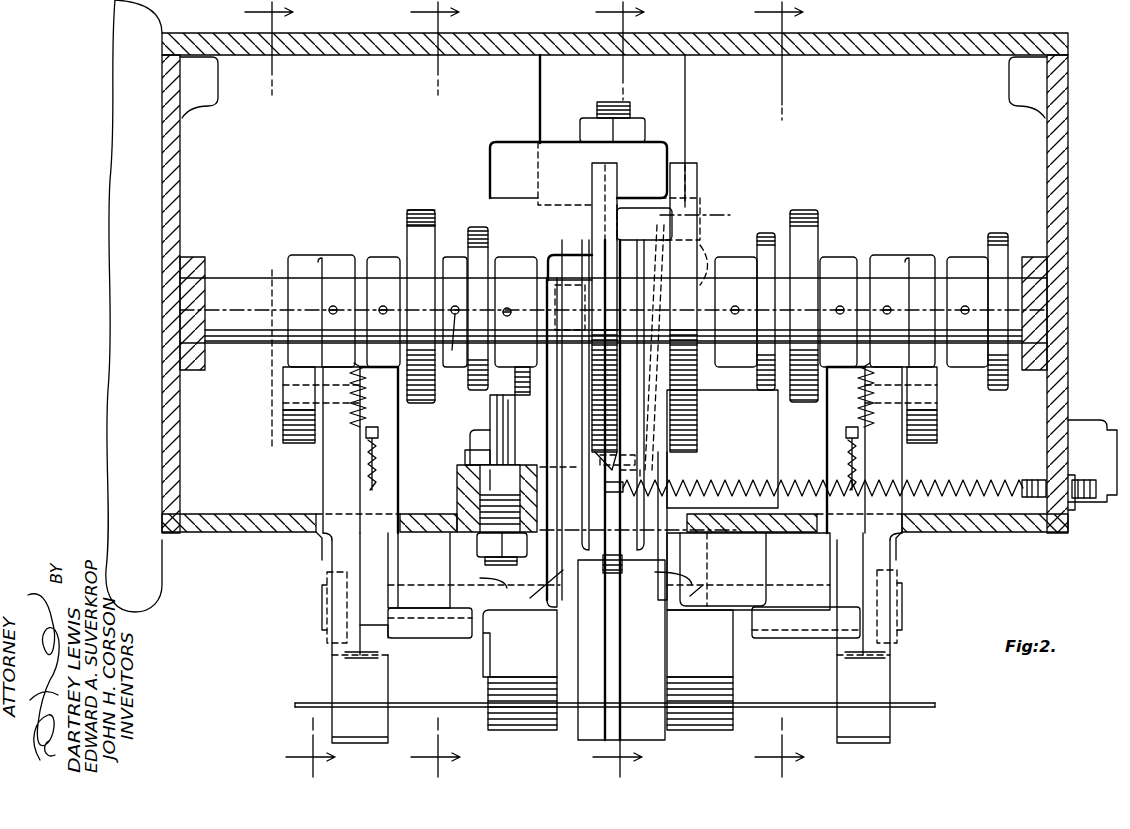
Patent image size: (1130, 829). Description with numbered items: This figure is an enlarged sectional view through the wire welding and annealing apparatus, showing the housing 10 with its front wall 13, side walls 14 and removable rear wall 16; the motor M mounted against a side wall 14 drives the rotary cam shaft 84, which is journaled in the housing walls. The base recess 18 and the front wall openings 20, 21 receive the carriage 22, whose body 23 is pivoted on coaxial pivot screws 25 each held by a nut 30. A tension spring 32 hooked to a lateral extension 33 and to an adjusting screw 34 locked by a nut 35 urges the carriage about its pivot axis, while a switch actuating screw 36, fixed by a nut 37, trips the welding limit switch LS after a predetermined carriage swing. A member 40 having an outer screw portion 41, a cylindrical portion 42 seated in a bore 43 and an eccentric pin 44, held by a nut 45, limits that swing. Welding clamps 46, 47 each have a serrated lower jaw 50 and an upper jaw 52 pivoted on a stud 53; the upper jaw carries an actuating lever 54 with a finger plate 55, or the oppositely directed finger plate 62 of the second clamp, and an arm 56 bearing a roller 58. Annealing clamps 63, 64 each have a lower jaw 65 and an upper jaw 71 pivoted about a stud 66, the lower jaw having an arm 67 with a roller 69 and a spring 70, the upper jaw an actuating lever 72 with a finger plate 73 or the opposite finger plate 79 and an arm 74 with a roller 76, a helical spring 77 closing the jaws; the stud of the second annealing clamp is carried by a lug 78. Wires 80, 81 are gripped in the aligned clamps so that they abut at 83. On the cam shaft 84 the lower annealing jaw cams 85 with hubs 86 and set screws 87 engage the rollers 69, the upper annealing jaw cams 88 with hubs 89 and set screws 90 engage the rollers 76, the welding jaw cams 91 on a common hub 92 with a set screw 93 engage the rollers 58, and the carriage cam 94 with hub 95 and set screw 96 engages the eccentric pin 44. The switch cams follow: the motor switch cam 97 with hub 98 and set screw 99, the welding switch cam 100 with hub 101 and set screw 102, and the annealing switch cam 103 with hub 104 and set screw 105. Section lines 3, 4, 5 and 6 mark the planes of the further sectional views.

The electric motor M is at (110, 300).
The housing 10 is at (1073, 230).
The front wall 13 is at (215, 535).
The side walls 14 is at (175, 158).
The removable rear wall 16 is at (905, 45).
The recess 18 is at (538, 88).
The opening 20 is at (318, 535).
The opening 21 is at (905, 533).
The carriage 22 is at (481, 163).
The carriage body 23 is at (430, 533).
The pivot screw 25 is at (607, 102).
The nut 30 is at (640, 125).
The helical spring 32 is at (975, 482).
The lateral extension 33 is at (617, 492).
The adjusting screw 34 is at (1032, 480).
The nut 35 is at (1082, 480).
The switch actuating screw 36 is at (555, 448).
The nut 37 is at (470, 440).
The member 40 is at (480, 430).
The outer screw portion 41 is at (470, 520).
The intermediate right cylindrical portion 42 is at (480, 480).
The bore 43 is at (480, 500).
The eccentric pin portion 44 is at (505, 412).
The nut 45 is at (518, 548).
The welding clamp 46 is at (553, 742).
The welding clamp 47 is at (679, 738).
The lower clamp jaw 50 is at (520, 718).
The upper clamp jaw 52 is at (585, 742).
The stud 53 is at (704, 582).
The actuating lever 54 is at (605, 590).
The finger plate 55 is at (1088, 420).
The arm 56 is at (578, 497).
The roller 58 is at (596, 265).
The finger plate 62 is at (712, 640).
The annealing clamp 63 is at (317, 651).
The annealing clamp 64 is at (903, 661).
The lower jaw 65 is at (360, 745).
The stud 66 is at (325, 622).
The arm 67 is at (335, 480).
The roller 69 is at (283, 372).
The spring 70 is at (374, 470).
The upper jaw 71 is at (370, 688).
The actuating lever 72 is at (366, 658).
The finger plate 73 is at (448, 638).
The arm 74 is at (440, 436).
The roller 76 is at (418, 272).
The helical spring 77 is at (368, 412).
The lug 78 is at (768, 565).
The finger plate 79 is at (768, 638).
The steel wire 80 is at (305, 703).
The steel wire 81 is at (935, 703).
The abutment 83 is at (605, 710).
The rotary cam shaft 84 is at (240, 290).
The lower annealing jaw cam 85 is at (283, 432).
The hub 86 is at (335, 258).
The set screw 87 is at (333, 306).
The upper annealing jaw cam 88 is at (420, 212).
The hub 89 is at (380, 258).
The set screw 90 is at (383, 314).
The welding jaw cam 91 is at (592, 178).
The common hub 92 is at (633, 246).
The set screw 93 is at (648, 300).
The carriage cam 94 is at (515, 380).
The hub 95 is at (510, 258).
The set screw 96 is at (507, 308).
The motor switch cam 97 is at (1000, 235).
The hub 98 is at (965, 258).
The set screw 99 is at (965, 314).
The welding switch cam 100 is at (477, 227).
The hub 101 is at (452, 258).
The set screw 102 is at (452, 352).
The annealing switch cam 103 is at (768, 233).
The hub 104 is at (735, 258).
The set screw 105 is at (735, 314).
The welding limit switch LS is at (770, 452).
The section line 3— 3 is at (435, 391).
The section line 4— 4 is at (618, 391).
The section line 5— 5 is at (290, 391).
The section line 6— 6 is at (779, 391).